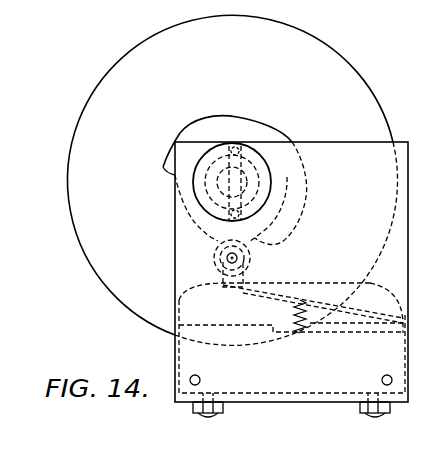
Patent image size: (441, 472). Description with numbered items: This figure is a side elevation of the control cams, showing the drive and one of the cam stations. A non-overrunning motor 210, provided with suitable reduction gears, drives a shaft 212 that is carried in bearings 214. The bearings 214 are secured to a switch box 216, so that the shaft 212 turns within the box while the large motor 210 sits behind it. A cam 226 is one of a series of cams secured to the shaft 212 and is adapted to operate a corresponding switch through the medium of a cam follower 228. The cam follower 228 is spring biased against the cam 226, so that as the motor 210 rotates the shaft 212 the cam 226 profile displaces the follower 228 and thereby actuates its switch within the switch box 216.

The non-overrunning motor 210 is at (118, 78).
The shaft 212 is at (251, 139).
The bearings 214 is at (268, 172).
The switch box 216 is at (180, 265).
The cam 226 is at (196, 131).
The cam followers 228 is at (253, 258).